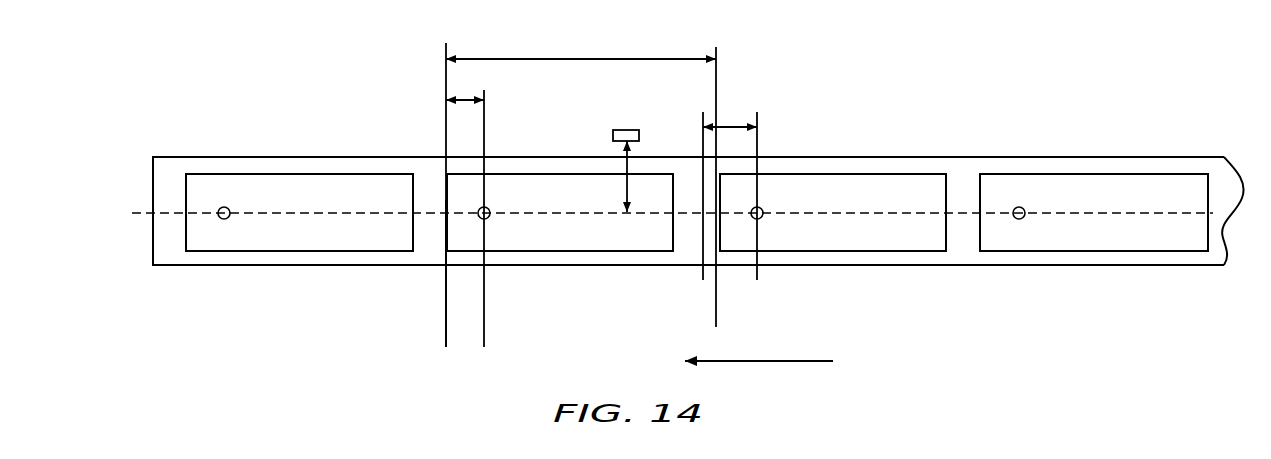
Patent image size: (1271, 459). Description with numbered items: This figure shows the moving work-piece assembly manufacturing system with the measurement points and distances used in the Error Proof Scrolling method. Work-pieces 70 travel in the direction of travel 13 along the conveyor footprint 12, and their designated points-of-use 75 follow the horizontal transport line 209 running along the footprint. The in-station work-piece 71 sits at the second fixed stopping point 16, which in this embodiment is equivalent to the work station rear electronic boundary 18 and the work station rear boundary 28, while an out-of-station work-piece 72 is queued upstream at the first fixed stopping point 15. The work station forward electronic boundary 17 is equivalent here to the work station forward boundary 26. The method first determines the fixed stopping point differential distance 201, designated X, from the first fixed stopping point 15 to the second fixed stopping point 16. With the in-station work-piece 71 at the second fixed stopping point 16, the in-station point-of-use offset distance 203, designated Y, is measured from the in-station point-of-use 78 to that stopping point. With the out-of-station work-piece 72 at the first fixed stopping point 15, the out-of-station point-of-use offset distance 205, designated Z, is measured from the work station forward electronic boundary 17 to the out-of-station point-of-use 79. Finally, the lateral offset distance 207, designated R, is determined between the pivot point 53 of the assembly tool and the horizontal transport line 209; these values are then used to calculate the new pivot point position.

The conveyor footprint 12 is at (1104, 155).
The direction of travel 13 is at (772, 361).
The first fixed stopping point 15 is at (720, 68).
The second fixed stopping point 16 is at (446, 76).
The work station forward electronic boundary 17 is at (700, 255).
The work station rear electronic boundary 18 is at (446, 312).
The work station forward boundary 26 is at (670, 231).
The work station rear boundary 28 is at (401, 273).
The pivot point 53 is at (623, 129).
The work-pieces 70 is at (695, 242).
The in-station work-piece 71 is at (590, 252).
The out-of-station work-piece 72 is at (277, 252).
The points-of-use 75 is at (224, 207).
The in-station point-of-use 78 is at (487, 208).
The out-of-station point-of-use 79 is at (760, 207).
The fixed stopping point differential distance 201 is at (573, 58).
The in-station point-of-use offset distance 203 is at (465, 103).
The out-of-station point-of-use offset distance 205 is at (730, 126).
The lateral offset distance 207 is at (627, 165).
The horizontal transport line 209 is at (603, 218).